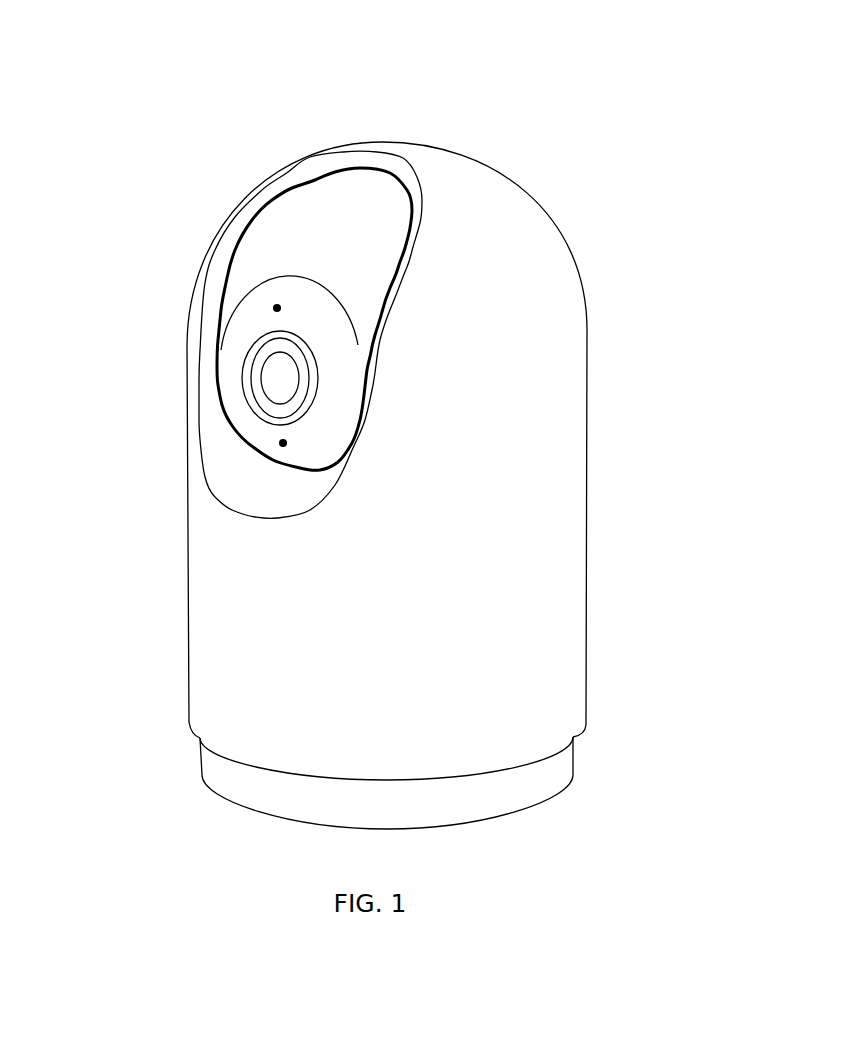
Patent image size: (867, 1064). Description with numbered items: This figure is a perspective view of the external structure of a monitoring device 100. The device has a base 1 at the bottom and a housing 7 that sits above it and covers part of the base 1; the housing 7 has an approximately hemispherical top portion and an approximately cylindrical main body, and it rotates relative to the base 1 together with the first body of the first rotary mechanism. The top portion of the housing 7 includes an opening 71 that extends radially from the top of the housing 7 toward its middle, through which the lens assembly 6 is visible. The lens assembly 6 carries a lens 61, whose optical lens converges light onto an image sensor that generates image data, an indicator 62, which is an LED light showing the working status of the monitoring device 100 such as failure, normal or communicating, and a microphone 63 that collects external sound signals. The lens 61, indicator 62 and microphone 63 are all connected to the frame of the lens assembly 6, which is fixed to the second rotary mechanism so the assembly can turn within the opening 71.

The monitoring device 100 is at (408, 113).
The base 1 is at (557, 758).
The housing 7 is at (560, 583).
The opening 71 is at (330, 237).
The lens assembly 6 is at (340, 368).
The lens 61 is at (272, 307).
The indicator 62 is at (270, 378).
The microphone 63 is at (280, 443).